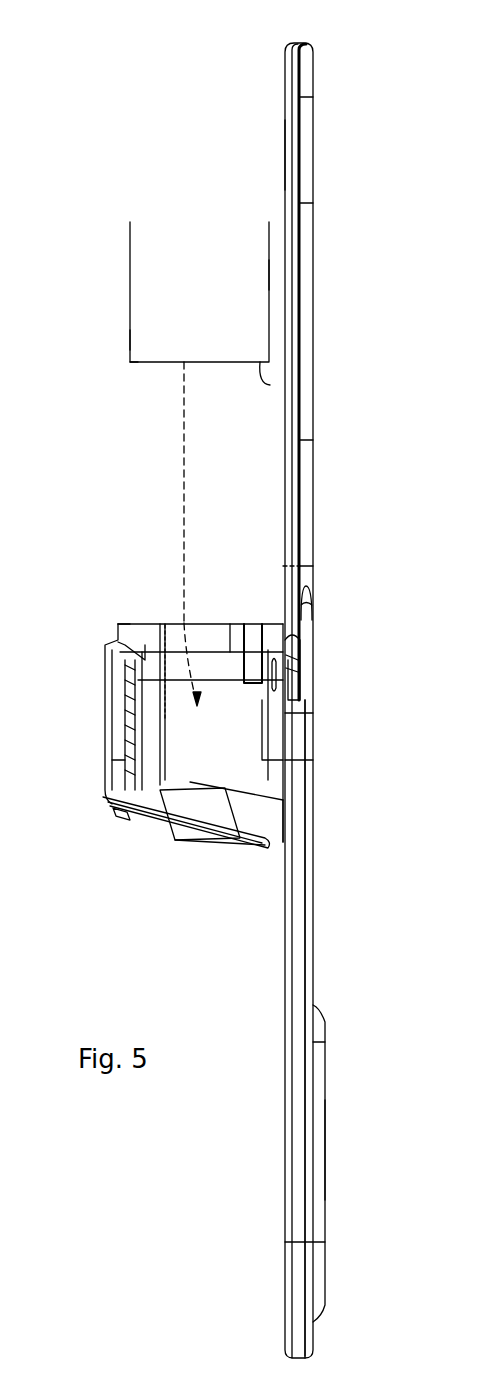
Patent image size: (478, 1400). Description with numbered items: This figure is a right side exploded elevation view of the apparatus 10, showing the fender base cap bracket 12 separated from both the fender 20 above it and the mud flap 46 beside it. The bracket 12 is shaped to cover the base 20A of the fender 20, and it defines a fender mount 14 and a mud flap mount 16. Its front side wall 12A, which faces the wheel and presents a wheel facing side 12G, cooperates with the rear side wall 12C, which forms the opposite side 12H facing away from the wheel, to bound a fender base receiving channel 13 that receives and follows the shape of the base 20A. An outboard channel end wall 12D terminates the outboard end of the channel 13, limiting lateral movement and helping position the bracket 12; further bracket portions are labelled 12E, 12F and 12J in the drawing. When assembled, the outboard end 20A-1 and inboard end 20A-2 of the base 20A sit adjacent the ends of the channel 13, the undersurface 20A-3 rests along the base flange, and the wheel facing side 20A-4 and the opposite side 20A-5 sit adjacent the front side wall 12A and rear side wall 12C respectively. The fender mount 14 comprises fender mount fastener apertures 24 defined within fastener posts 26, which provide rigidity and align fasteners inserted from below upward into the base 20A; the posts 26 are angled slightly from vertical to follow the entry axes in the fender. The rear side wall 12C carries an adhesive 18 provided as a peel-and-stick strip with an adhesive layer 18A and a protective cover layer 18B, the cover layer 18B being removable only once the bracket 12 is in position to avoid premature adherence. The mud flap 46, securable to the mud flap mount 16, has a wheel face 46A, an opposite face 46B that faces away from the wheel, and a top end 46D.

The apparatus 10 is at (172, 62).
The fender base cap bracket 12 is at (165, 625).
The front side wall 12A is at (290, 786).
The rear side wall 12C is at (110, 672).
The outboard channel end wall 12D is at (272, 762).
The bracket top wall 12E is at (229, 620).
The bracket bottom wall 12F is at (188, 838).
The wheel facing side 12G is at (296, 802).
The side facing away from the wheel 12H is at (100, 617).
The bracket tab 12J is at (300, 566).
The fender base receiving channel 13 is at (199, 714).
The fender mount 14 is at (248, 630).
The mud flap mount 16 is at (284, 722).
The adhesive 18 is at (118, 718).
The adhesive layer 18A is at (112, 760).
The protective cover layer 18B is at (120, 812).
The fender 20 is at (130, 276).
The base 20A is at (160, 362).
The outboard end 20A-1 is at (138, 370).
The inboard end 20A-2 is at (245, 319).
The undersurface 20A-3 is at (270, 385).
The wheel facing side 20A-4 is at (130, 340).
The side facing away from the wheel facing side 20A-5 is at (269, 270).
The fender mount fastener apertures 24 is at (170, 828).
The fastener posts 26 is at (205, 820).
The mud flap 46 is at (322, 1056).
The wheel face 46A is at (316, 519).
The face facing away from the wheel face 46B is at (284, 155).
The top end 46D is at (300, 1148).